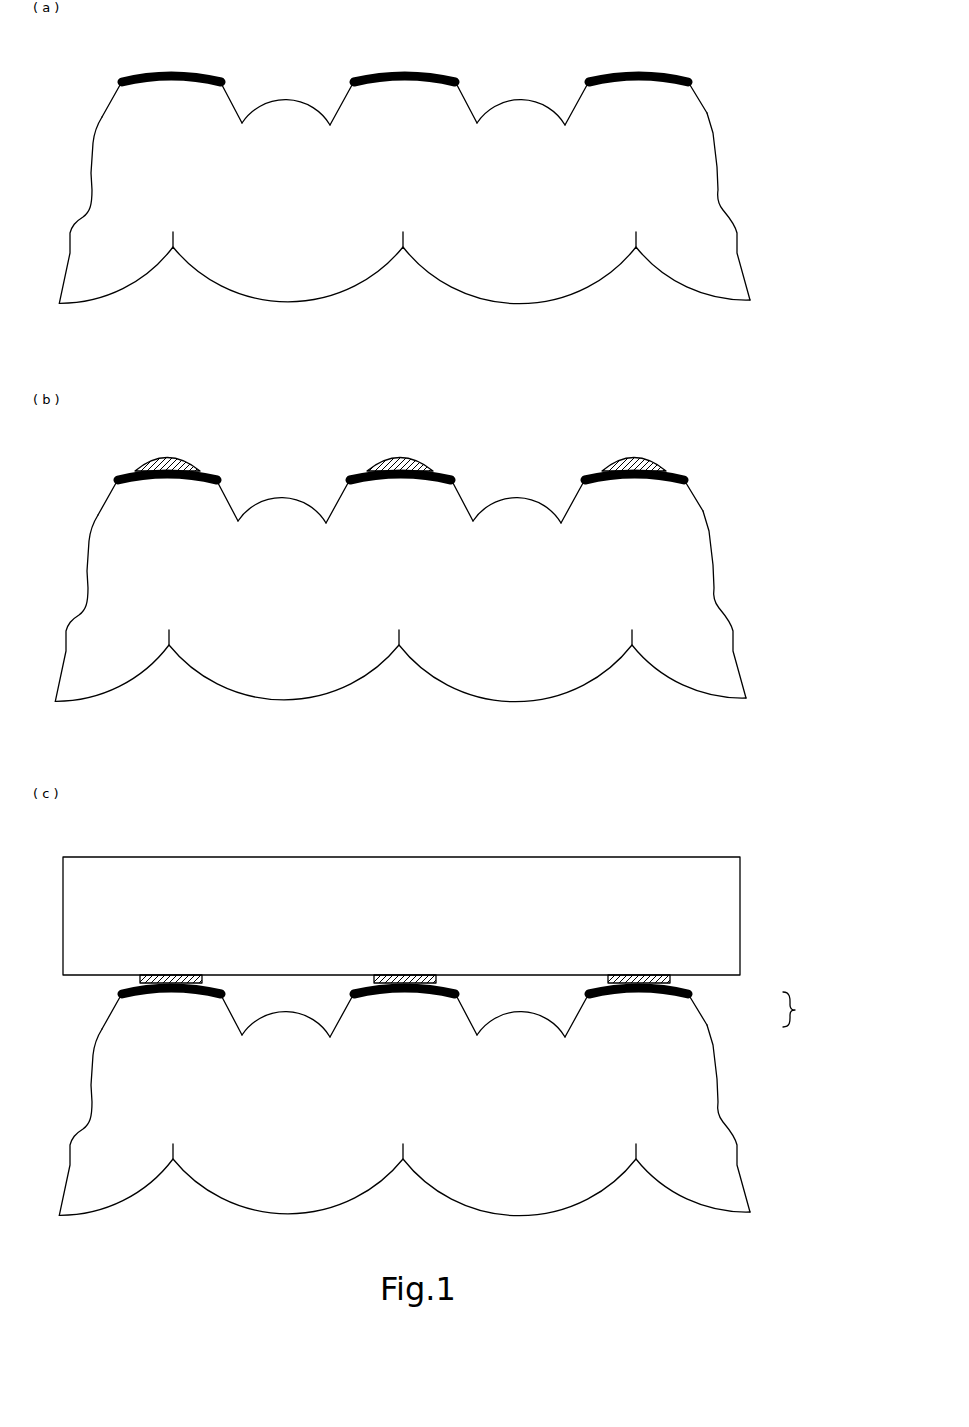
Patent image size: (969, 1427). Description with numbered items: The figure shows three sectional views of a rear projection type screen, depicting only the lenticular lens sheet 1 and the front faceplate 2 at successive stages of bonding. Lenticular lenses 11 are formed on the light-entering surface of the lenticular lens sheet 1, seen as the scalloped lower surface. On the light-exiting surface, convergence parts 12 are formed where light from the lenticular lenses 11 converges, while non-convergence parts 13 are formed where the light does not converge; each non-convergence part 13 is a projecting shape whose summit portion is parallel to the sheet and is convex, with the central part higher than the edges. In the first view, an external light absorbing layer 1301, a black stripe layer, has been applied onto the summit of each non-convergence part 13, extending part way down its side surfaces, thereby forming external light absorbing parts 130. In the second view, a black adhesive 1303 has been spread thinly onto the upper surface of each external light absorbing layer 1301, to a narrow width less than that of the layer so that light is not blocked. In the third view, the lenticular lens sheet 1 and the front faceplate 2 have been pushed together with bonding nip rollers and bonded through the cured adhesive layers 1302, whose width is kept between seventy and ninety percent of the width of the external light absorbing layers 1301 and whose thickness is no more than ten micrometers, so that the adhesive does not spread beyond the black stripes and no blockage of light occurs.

The lenticular lens sheet 1 is at (91, 173).
The lenticular lenses 11 is at (543, 302).
The convergence parts 12 is at (527, 102).
The non-convergence parts 13 is at (707, 112).
The external light absorbing layer 1301 is at (655, 72).
The adhesive layers 1302 is at (672, 980).
The black adhesive 1303 is at (642, 456).
The external light absorbing parts 130 is at (807, 1009).
The front faceplate 2 is at (667, 857).